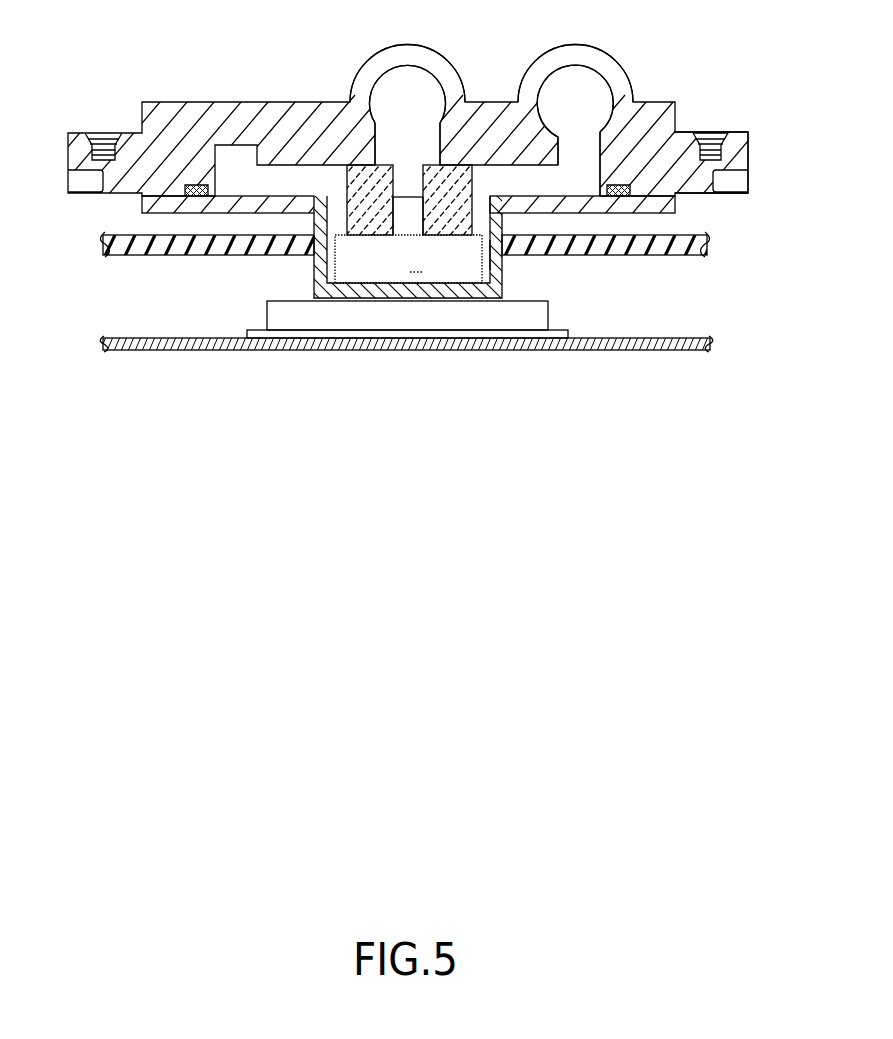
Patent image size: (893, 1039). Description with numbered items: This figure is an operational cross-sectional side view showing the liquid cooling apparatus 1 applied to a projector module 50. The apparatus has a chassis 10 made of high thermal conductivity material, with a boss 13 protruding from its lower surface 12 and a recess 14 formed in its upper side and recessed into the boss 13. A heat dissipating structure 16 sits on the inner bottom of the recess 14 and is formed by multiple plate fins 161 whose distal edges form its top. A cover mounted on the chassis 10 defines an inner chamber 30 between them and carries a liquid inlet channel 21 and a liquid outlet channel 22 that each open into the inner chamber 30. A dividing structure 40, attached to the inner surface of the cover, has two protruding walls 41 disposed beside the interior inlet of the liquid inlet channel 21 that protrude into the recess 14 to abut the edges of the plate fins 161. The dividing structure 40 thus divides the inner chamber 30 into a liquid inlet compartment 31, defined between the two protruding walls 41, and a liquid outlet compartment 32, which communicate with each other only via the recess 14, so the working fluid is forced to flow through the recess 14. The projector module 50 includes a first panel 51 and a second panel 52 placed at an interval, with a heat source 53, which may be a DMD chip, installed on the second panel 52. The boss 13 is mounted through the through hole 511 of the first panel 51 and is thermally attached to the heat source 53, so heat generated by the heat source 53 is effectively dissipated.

The liquid cooling apparatus 1 is at (707, 120).
The chassis 10 is at (207, 202).
The lower surface 12 is at (258, 213).
The boss 13 is at (345, 297).
The recess 14 is at (490, 262).
The heat dissipating structure 16 is at (345, 262).
The plate fins 161 is at (416, 272).
The liquid inlet channel 21 is at (407, 82).
The liquid outlet channel 22 is at (578, 82).
The inner chamber 30 is at (588, 170).
The liquid inlet compartment 31 is at (412, 185).
The liquid outlet compartment 32 is at (573, 205).
The dividing structure 40 is at (338, 178).
The protruding walls 41 is at (440, 237).
The projector module 50 is at (638, 365).
The first panel 51 is at (708, 245).
The through hole 511 is at (490, 252).
The second panel 52 is at (680, 350).
The heat source 53 is at (387, 315).